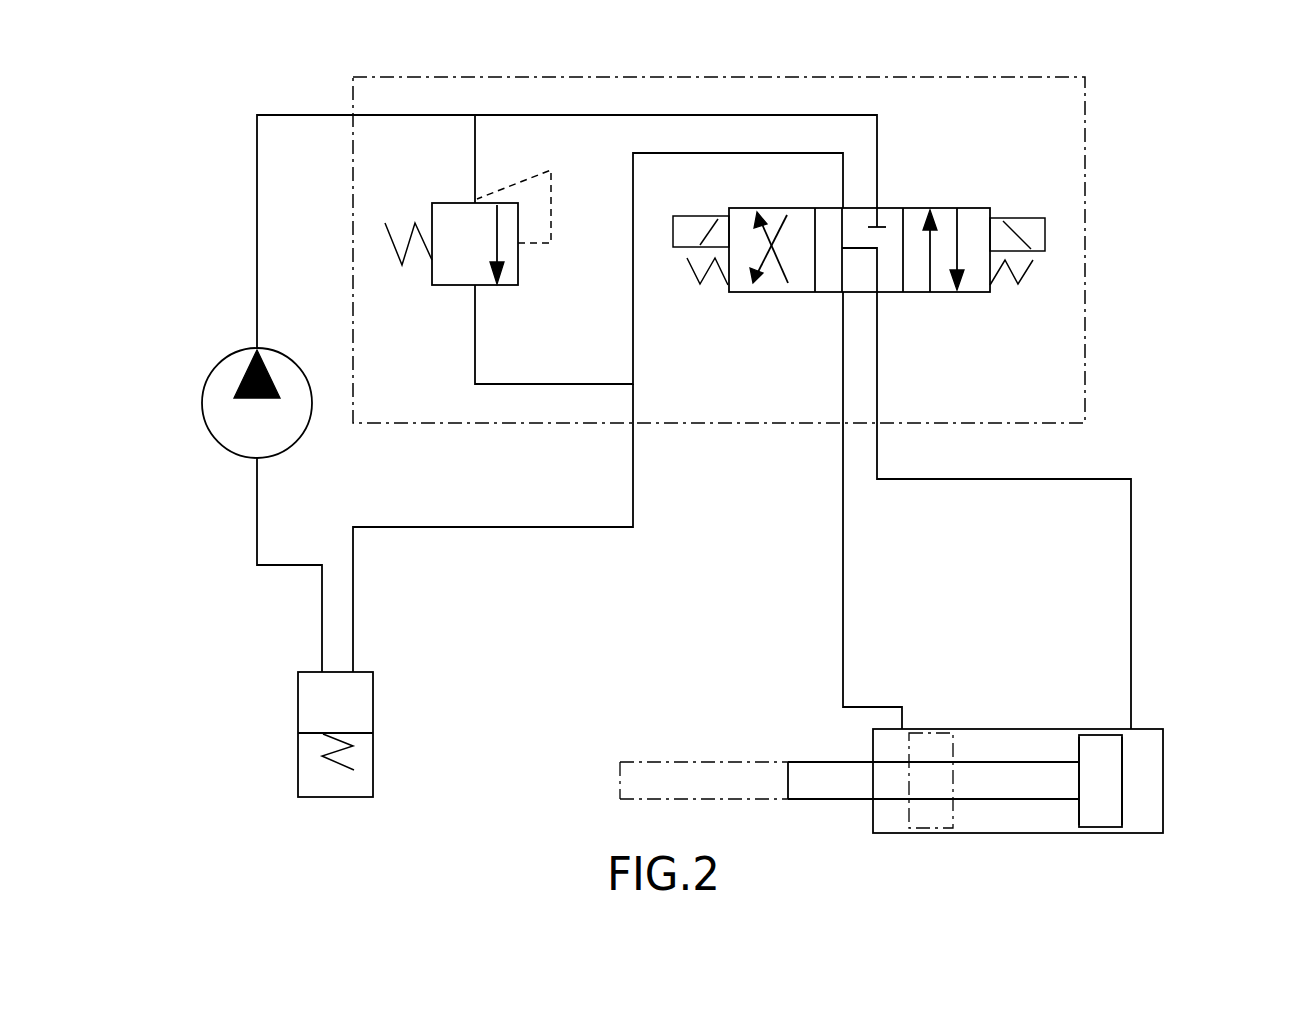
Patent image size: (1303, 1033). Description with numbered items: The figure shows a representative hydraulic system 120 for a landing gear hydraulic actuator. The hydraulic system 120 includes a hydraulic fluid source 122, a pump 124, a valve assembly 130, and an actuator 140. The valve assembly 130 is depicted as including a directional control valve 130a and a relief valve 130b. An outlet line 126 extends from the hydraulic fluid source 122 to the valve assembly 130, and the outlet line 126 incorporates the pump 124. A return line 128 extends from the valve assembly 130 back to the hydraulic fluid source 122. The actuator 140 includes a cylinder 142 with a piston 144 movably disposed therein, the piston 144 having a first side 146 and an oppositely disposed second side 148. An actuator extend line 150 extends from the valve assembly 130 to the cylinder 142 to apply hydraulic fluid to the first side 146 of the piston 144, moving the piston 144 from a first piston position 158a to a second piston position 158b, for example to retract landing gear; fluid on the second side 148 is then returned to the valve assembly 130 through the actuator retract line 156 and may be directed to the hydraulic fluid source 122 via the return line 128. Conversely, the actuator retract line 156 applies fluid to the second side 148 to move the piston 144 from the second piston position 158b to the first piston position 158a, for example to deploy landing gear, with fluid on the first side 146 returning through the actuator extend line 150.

The hydraulic system 120 is at (1176, 103).
The hydraulic fluid source 122 is at (373, 700).
The pump 124 is at (205, 389).
The outlet line 126 is at (257, 226).
The return line 128 is at (493, 528).
The valve assembly 130 is at (1085, 143).
The directional control valve 130a is at (943, 208).
The relief valve 130b is at (440, 286).
The actuator 140 is at (1181, 664).
The cylinder 142 is at (994, 729).
The piston 144 is at (935, 824).
The first side 146 is at (1122, 808).
The second side 148 is at (1078, 812).
The actuator extend line 150 is at (1131, 535).
The actuator retract line 156 is at (843, 613).
The first piston position 158a is at (1138, 773).
The second piston position 158b is at (876, 822).